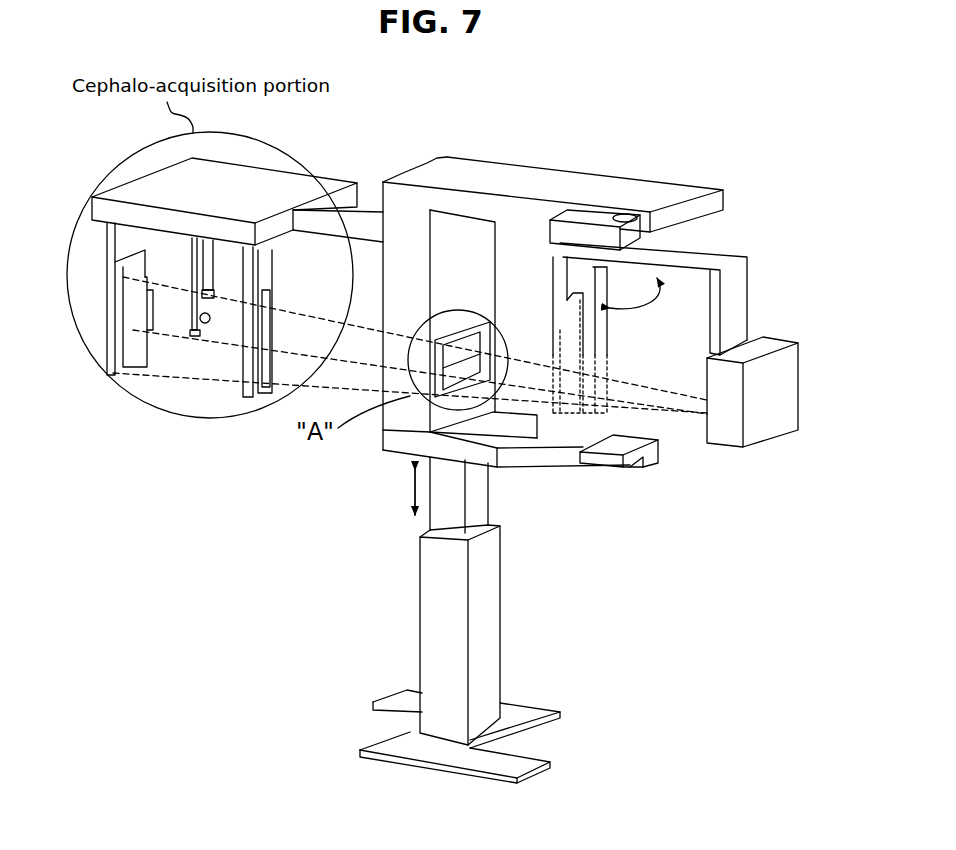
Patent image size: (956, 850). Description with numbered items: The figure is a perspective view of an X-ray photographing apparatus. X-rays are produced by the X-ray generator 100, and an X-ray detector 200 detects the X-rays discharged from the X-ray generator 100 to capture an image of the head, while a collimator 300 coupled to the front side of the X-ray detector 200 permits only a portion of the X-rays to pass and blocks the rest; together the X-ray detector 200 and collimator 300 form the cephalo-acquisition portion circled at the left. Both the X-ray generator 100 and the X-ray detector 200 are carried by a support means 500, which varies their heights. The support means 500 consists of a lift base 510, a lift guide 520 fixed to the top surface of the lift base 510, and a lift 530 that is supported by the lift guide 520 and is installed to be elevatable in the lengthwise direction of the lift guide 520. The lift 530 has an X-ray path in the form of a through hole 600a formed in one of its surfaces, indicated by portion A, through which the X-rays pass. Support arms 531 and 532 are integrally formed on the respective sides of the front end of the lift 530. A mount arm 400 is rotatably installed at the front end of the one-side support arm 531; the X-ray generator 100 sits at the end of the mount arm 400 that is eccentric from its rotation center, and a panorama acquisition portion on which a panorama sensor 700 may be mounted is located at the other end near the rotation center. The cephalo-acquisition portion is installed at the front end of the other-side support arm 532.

The X-ray generator 100 is at (775, 432).
The X-ray detector 200 is at (115, 355).
The collimator 300 is at (250, 398).
The mount arm 400 is at (705, 262).
The support means 500 is at (485, 641).
The lift base 510 is at (448, 748).
The lift guide 520 is at (430, 640).
The lift 530 is at (383, 428).
The one-side support arm 531 is at (550, 182).
The other-side support arm 532 is at (378, 211).
The through hole 600a is at (462, 362).
The panorama sensor 700 is at (597, 378).